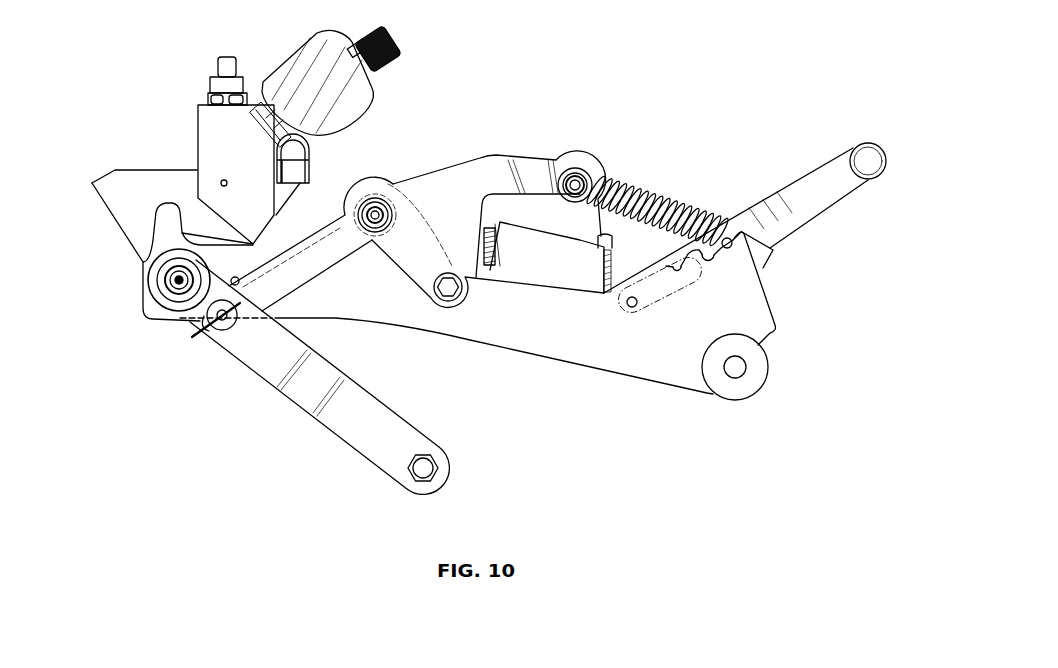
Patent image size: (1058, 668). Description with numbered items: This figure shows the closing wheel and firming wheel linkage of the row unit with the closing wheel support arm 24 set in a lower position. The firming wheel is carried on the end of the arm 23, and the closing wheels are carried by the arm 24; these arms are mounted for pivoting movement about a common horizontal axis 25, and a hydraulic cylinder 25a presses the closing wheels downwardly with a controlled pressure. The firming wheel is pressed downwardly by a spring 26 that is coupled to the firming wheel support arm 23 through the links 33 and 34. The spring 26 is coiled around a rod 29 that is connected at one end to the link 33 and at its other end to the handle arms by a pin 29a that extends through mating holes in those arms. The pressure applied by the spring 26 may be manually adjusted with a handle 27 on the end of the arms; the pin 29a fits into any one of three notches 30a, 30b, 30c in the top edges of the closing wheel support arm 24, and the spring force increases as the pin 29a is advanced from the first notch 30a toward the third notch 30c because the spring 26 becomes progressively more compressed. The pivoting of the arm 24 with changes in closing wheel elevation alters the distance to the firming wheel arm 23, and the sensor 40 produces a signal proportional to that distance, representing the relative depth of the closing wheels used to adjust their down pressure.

The arm 23 is at (247, 368).
The arm 24 is at (513, 358).
The common horizontal axis 25 is at (170, 279).
The hydraulic cylinder 25a is at (198, 117).
The spring 26 is at (614, 184).
The handle 27 is at (884, 146).
The rod 29 is at (645, 195).
The pin 29a is at (726, 236).
The notch 30a is at (735, 243).
The notch 30b is at (712, 257).
The notch 30c is at (682, 270).
The link 33 is at (455, 163).
The link 34 is at (323, 225).
The sensor 40 is at (530, 227).